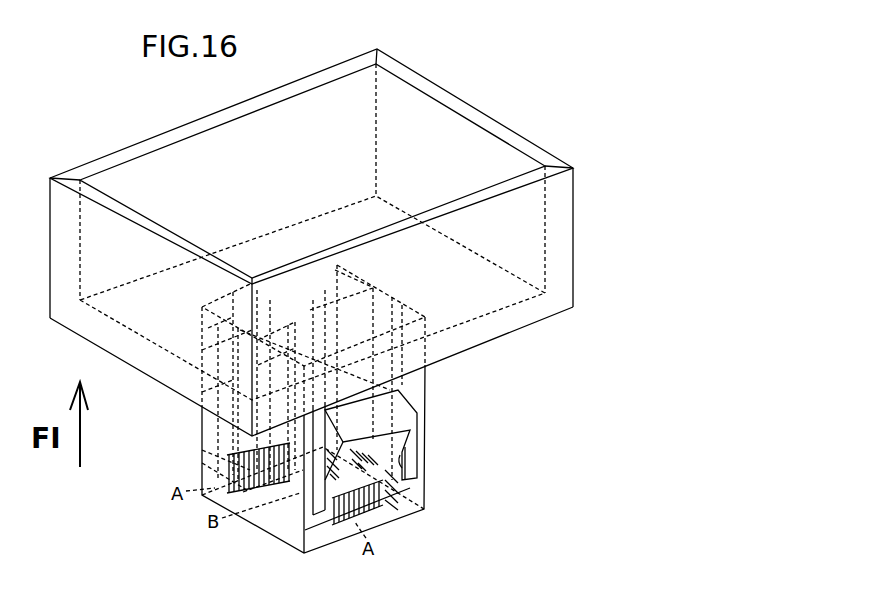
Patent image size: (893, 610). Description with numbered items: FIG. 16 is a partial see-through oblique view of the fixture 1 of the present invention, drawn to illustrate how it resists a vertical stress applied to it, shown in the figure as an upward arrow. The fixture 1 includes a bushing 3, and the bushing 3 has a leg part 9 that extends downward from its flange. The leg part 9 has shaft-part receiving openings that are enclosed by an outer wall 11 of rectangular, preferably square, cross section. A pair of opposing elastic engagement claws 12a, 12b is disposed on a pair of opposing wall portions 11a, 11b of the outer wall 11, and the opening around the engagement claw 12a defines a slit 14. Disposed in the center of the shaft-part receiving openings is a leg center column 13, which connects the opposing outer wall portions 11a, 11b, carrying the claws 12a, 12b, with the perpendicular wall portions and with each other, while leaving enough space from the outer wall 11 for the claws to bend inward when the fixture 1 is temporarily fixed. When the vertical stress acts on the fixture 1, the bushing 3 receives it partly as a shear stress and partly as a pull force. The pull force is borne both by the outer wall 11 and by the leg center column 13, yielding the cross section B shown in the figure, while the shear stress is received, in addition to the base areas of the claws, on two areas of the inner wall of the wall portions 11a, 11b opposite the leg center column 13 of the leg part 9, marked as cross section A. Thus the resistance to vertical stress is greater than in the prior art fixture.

The fixture 1 is at (548, 128).
The bushing 3 is at (518, 343).
The leg part 9 is at (426, 492).
The outer wall 11 is at (418, 392).
The opposing wall portion 11a is at (413, 502).
The opposing wall portion 11b is at (202, 450).
The elastic engagement claw 12a is at (413, 425).
The elastic engagement claw 12b is at (205, 391).
The leg center column 13 is at (210, 462).
The slit 14 is at (402, 462).